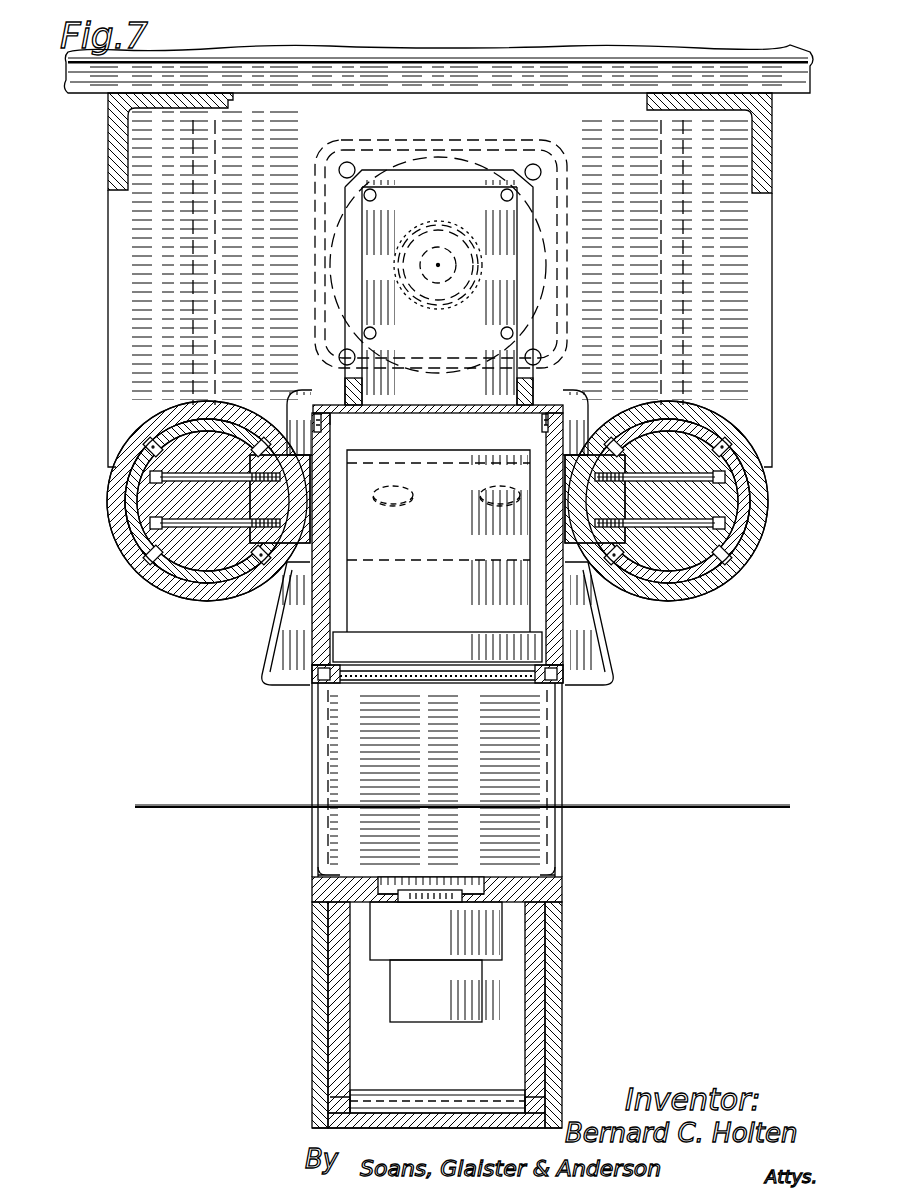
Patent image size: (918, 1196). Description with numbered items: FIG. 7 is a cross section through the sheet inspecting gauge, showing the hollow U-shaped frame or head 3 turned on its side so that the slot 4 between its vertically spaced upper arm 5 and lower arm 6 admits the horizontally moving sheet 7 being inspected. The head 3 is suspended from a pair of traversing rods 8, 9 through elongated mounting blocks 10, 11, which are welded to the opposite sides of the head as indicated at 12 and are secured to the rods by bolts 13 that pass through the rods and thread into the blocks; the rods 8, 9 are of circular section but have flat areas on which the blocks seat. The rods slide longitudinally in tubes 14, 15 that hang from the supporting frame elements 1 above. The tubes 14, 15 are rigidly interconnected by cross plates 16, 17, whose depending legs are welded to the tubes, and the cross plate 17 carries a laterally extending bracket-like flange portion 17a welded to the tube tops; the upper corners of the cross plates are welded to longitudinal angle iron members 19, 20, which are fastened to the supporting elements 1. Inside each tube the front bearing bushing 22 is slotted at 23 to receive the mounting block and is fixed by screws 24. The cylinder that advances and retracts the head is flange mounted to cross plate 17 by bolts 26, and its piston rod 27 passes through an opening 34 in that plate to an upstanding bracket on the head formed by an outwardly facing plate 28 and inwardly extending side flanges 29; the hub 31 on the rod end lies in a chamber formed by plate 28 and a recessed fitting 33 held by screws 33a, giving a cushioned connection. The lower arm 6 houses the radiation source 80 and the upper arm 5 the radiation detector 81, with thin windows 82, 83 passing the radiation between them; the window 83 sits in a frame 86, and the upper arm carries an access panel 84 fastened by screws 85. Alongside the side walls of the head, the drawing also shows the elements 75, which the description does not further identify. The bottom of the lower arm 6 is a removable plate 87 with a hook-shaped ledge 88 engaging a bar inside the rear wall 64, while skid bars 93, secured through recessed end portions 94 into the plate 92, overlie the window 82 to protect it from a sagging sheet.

The supporting frame elements 1 is at (485, 75).
The U-shaped frame or head 3 is at (568, 428).
The slot 4 is at (340, 758).
The upper arm 5 is at (557, 620).
The lower arm 6 is at (563, 962).
The sheet 7 is at (200, 810).
The traversing rod 8 is at (185, 430).
The traversing rod 9 is at (698, 435).
The mounting block 10 is at (300, 525).
The mounting block 11 is at (580, 525).
The welds 12 is at (322, 442).
The bolts 13 is at (243, 516).
The tube 14 is at (200, 588).
The tube 15 is at (760, 530).
The cross plate 16 is at (570, 412).
The cross plate 17 is at (772, 287).
The bracket-like flange portion 17a is at (200, 276).
The angle iron member 19 is at (108, 165).
The angle iron member 20 is at (772, 160).
The bearing bushing 22 is at (140, 525).
The slot 23 is at (292, 430).
The screws 24 is at (252, 440).
The bolts 26 is at (350, 162).
The piston rod 27 is at (420, 272).
The bracket plate 28 is at (465, 175).
The side flanges 29 is at (352, 245).
The hub 31 is at (464, 270).
The recessed fitting 33 is at (428, 150).
The screws 33a is at (376, 194).
The opening 34 is at (452, 250).
The rear wall 64 is at (462, 1066).
The stops 75 is at (282, 648).
The source of radiation 80 is at (416, 1010).
The radiation detector 81 is at (444, 456).
The window 82 is at (432, 886).
The window 83 is at (483, 685).
The access panel 84 is at (470, 405).
The screws 85 is at (317, 410).
The frame 86 is at (320, 690).
The removable plate or panel 87 is at (420, 1120).
The hook shaped ledge 88 is at (497, 1085).
The plate 92 is at (565, 892).
The skid bars 93 is at (378, 876).
The recessed end portions 94 is at (320, 874).